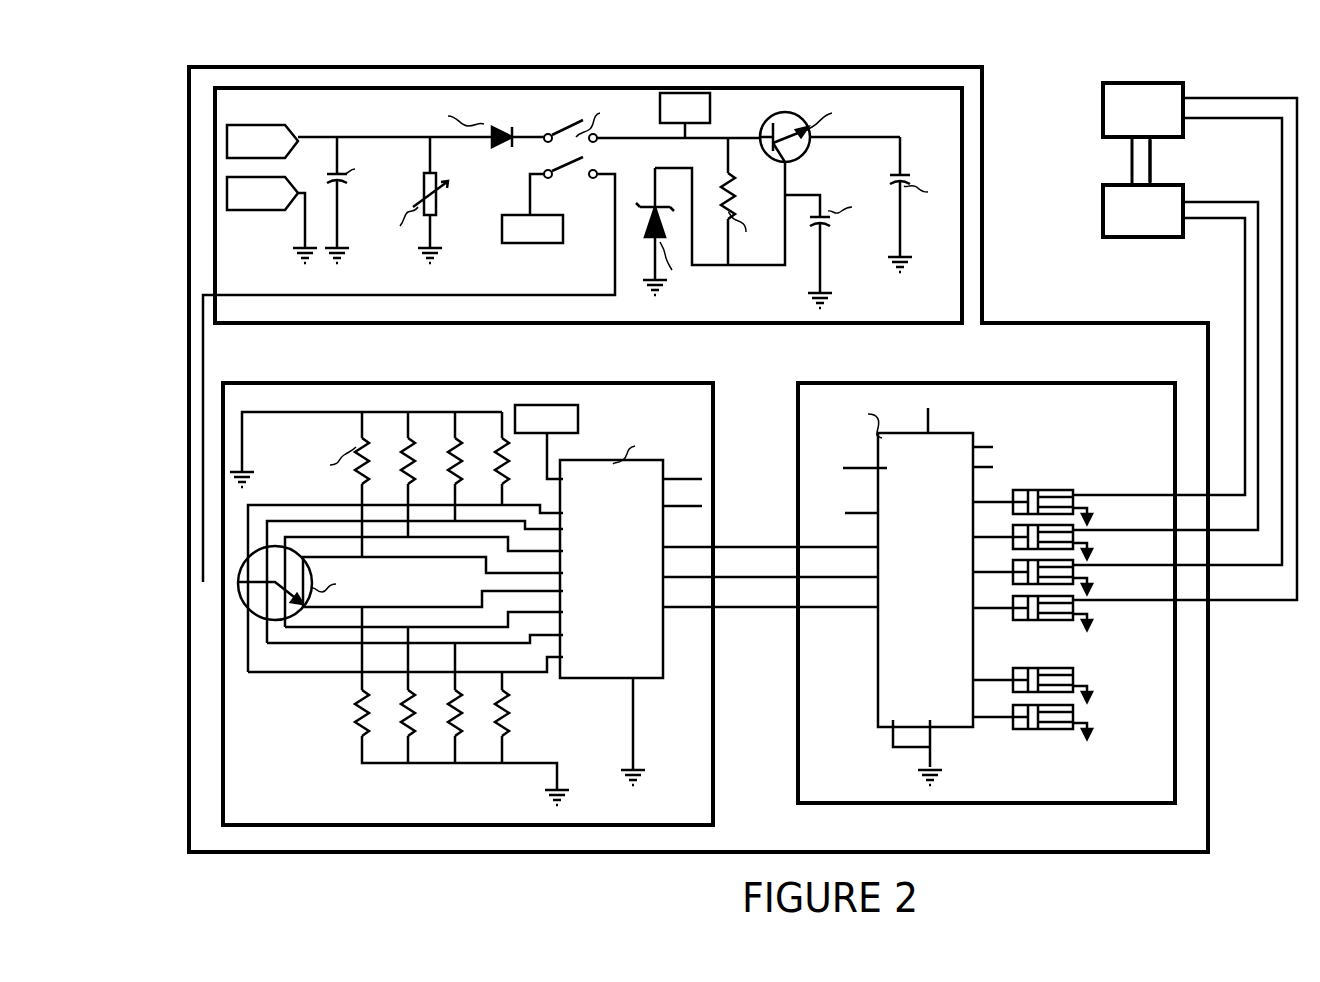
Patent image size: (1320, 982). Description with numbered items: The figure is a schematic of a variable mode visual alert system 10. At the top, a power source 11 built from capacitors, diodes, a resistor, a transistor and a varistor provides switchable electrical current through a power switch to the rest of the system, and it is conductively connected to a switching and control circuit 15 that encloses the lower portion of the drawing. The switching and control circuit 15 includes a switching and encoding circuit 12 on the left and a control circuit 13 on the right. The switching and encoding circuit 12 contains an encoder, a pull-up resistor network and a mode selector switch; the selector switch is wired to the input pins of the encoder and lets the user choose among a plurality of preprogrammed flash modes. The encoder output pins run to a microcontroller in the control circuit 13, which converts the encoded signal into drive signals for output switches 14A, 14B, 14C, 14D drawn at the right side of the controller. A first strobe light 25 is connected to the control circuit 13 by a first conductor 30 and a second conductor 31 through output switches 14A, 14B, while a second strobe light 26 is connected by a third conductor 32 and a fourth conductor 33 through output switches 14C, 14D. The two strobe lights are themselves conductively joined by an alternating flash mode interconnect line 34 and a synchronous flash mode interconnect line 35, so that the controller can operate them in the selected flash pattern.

The variable mode visual alert system 10 is at (743, 471).
The power source 11 is at (932, 302).
The switching and encoding circuit 12 is at (637, 383).
The control circuit 13 is at (986, 611).
The output switch 14A is at (1076, 494).
The output switch 14B is at (1079, 529).
The output switch 14C is at (1079, 564).
The output switch 14D is at (1088, 602).
The switching and control circuit 15 is at (703, 75).
The first strobe light 25 is at (1123, 226).
The second strobe light 26 is at (1160, 62).
The first conductor 30 is at (1197, 497).
The second conductor 31 is at (1201, 533).
The third conductor 32 is at (1203, 568).
The fourth conductor 33 is at (1203, 604).
The alternating flash mode interconnect line 34 is at (1131, 168).
The synchronous flash mode interconnect line 35 is at (1152, 148).